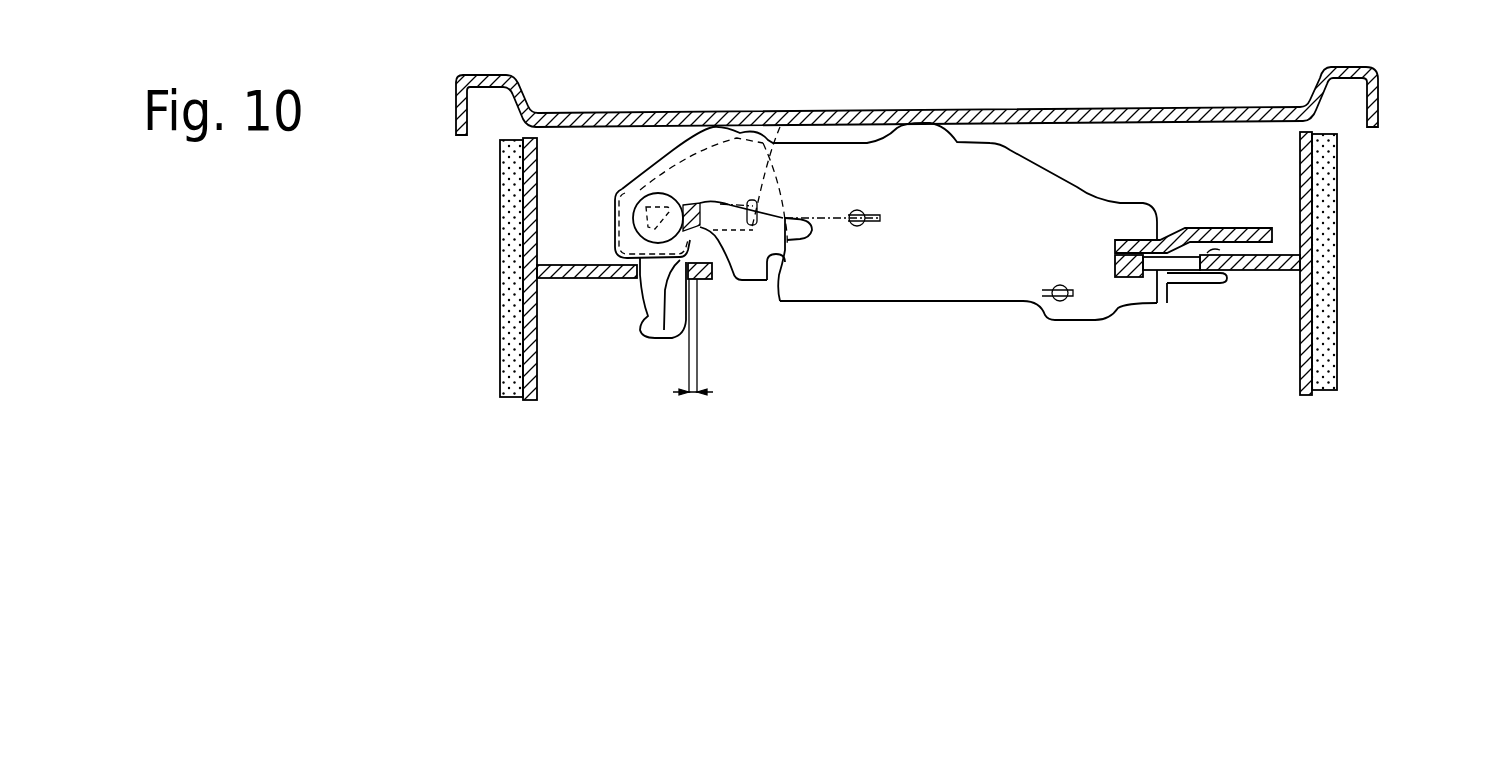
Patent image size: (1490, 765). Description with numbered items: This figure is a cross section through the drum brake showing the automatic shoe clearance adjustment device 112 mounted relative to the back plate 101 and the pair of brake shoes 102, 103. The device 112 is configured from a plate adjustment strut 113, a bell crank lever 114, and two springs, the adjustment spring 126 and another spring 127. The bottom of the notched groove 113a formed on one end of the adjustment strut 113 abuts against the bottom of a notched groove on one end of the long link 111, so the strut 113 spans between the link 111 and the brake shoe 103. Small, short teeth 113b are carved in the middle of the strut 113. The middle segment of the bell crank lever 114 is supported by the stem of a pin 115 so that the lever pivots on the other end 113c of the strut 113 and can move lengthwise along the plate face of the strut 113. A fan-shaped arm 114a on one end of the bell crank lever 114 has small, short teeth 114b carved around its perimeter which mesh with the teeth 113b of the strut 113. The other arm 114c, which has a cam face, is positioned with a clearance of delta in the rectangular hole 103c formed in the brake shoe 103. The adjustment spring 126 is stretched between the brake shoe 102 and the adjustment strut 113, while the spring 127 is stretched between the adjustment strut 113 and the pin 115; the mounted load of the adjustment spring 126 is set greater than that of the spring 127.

The back plate 101 is at (1055, 107).
The brake shoe 102 is at (1337, 303).
The brake shoe 103 is at (500, 308).
The rectangular hole 103c is at (680, 263).
The long link 111 is at (1217, 228).
The automatic shoe clearance adjustment device 112 is at (940, 301).
The adjustment strut 113 is at (995, 287).
The notched groove 113a is at (1122, 278).
The small short teeth 113b is at (782, 303).
The other end of the strut 113c is at (692, 132).
The bell crank lever 114 is at (750, 270).
The fan-shaped arm 114a is at (736, 272).
The small short teeth 114b is at (786, 252).
The other arm 114c is at (640, 292).
The pin 115 is at (645, 205).
The adjustment spring 126 is at (1165, 283).
The spring 127 is at (780, 127).